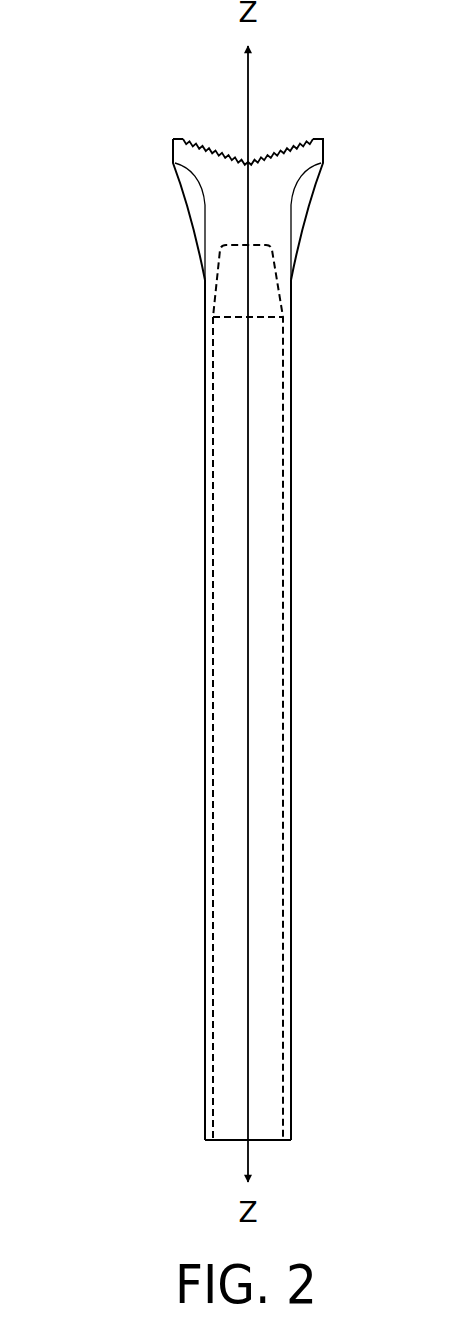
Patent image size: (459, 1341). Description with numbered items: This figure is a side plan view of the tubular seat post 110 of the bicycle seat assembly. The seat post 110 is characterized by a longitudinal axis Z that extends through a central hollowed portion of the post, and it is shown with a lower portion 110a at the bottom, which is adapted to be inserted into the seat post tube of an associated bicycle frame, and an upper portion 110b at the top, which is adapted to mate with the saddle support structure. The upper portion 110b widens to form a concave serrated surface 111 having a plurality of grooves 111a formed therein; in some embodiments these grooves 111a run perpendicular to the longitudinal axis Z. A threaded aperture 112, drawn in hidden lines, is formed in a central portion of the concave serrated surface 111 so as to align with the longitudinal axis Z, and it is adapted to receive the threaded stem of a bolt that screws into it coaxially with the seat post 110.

The tubular seat post 110 is at (292, 733).
The lower portion 110a is at (199, 1105).
The upper portion 110b is at (172, 203).
The concave serrated surface 111 is at (278, 173).
The grooves 111a is at (267, 152).
The threaded aperture 112 is at (234, 271).